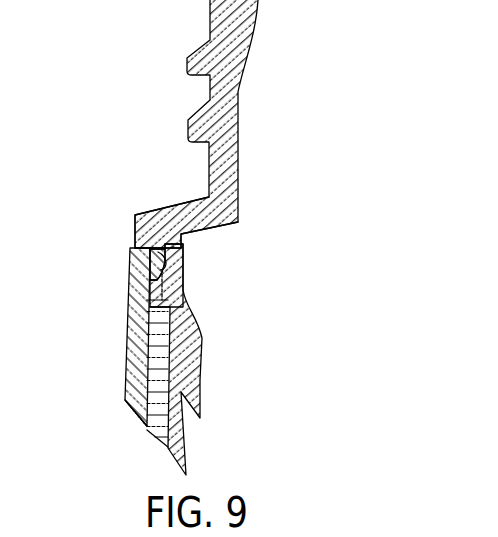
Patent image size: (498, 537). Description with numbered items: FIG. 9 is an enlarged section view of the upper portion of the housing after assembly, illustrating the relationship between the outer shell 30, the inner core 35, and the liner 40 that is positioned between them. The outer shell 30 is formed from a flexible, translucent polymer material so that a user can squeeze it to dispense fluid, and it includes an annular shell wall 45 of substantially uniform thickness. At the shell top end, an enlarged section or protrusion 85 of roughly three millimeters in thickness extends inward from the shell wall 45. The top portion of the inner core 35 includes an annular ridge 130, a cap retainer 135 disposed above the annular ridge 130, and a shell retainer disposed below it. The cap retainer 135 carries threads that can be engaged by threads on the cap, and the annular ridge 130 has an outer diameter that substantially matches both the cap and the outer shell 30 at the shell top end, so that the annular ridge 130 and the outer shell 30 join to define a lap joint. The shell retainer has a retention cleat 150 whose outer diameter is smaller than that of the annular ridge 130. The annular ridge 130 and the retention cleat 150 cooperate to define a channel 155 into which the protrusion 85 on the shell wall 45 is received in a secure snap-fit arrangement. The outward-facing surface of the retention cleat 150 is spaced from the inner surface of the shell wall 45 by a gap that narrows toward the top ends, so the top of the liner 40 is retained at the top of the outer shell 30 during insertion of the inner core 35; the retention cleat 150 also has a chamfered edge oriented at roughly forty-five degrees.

The cap retainer 135 is at (153, 72).
The annular ridge 130 is at (135, 221).
The protrusion 85 is at (152, 254).
The channel 155 is at (165, 262).
The retention cleat 150 is at (160, 284).
The outer shell 30 is at (127, 338).
The inner core 35 is at (200, 340).
The shell wall 45 is at (133, 385).
The liner 40 is at (149, 440).